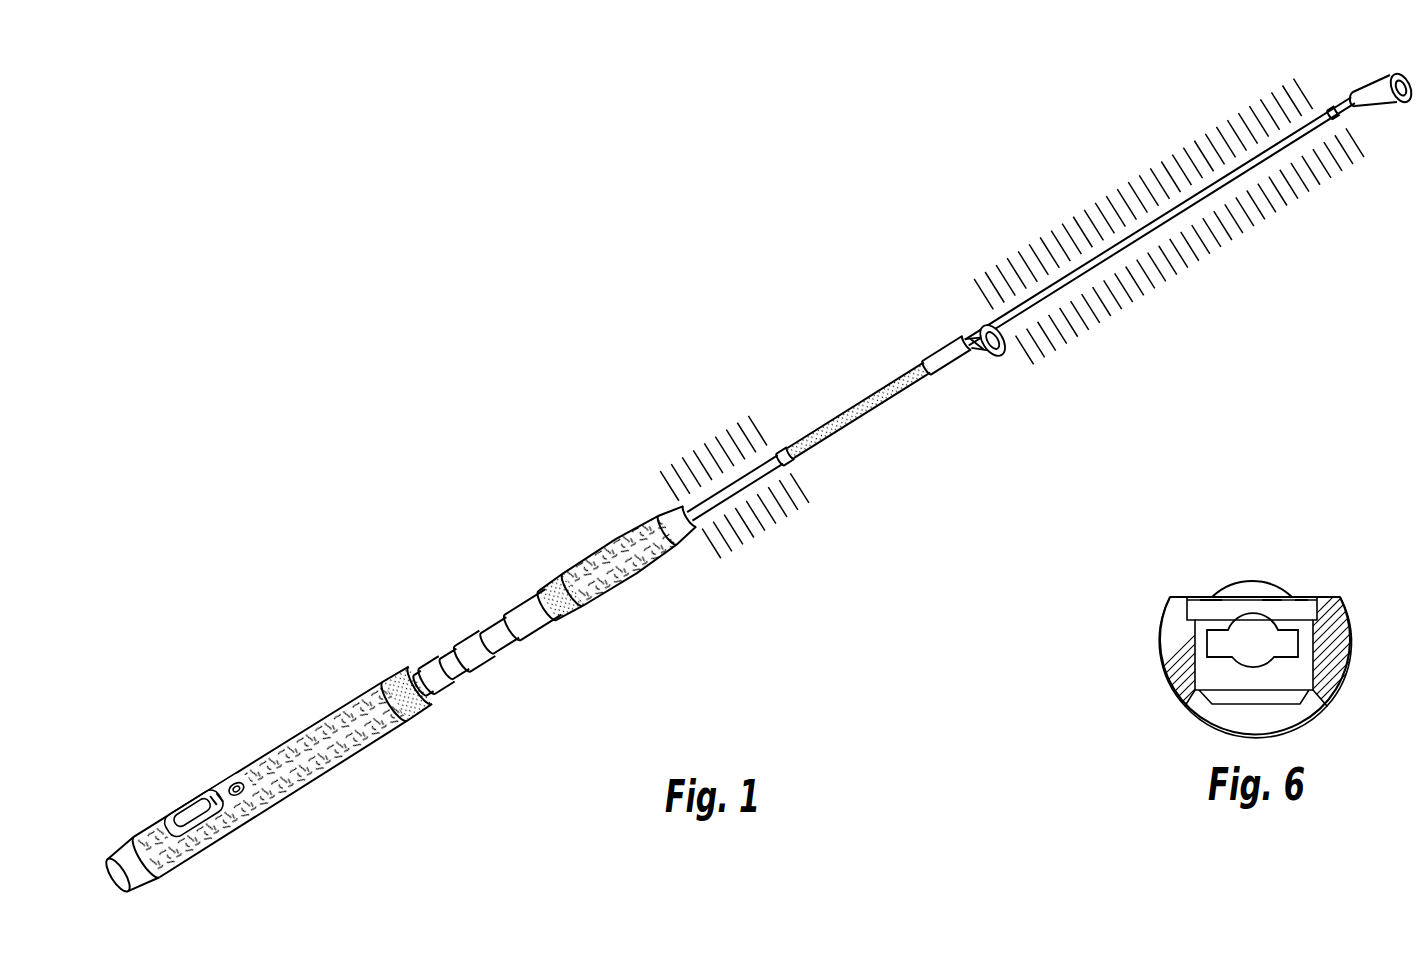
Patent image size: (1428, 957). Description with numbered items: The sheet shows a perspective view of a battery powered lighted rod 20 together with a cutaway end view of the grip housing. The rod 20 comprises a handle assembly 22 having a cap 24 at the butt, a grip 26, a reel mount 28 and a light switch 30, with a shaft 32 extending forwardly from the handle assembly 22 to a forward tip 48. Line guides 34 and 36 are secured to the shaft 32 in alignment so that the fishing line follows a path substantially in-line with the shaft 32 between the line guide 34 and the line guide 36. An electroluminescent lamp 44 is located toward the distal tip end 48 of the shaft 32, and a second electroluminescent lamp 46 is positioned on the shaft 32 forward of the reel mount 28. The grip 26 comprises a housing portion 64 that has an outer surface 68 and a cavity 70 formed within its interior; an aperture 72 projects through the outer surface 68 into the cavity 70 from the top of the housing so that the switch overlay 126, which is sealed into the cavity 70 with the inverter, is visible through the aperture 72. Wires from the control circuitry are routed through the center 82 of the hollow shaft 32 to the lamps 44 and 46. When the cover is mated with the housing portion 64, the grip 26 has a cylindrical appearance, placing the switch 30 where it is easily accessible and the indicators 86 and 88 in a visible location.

In FIG. 1, the battery powered lighted rod 20 is at (843, 376).
In FIG. 1, the handle assembly 22 is at (592, 614).
In FIG. 1, the cap 24 is at (145, 882).
In FIG. 1, the grip 26 is at (265, 806).
In FIG. 1, the reel mount 28 is at (508, 646).
In FIG. 1, the light switch 30 is at (228, 790).
In FIG. 1, the shaft 32 is at (867, 404).
In FIG. 6, the shaft 32 is at (1252, 585).
In FIG. 1, the line guide 34 is at (990, 355).
In FIG. 1, the line guide 36 is at (1387, 107).
In FIG. 1, the electroluminescent lamp 44 is at (1222, 190).
In FIG. 1, the electroluminescent lamp 46 is at (735, 478).
In FIG. 1, the forward tip 48 is at (1372, 80).
In FIG. 6, the housing portion 64 is at (1352, 641).
In FIG. 6, the outer surface 68 is at (1160, 650).
In FIG. 6, the cavity 70 is at (1293, 672).
In FIG. 1, the aperture 72 is at (238, 786).
In FIG. 6, the center of hollow shaft 82 is at (1255, 632).
In FIG. 1, the indicator 86 is at (203, 794).
In FIG. 1, the indicator 88 is at (187, 803).
In FIG. 1, the switch overlay 126 is at (183, 828).